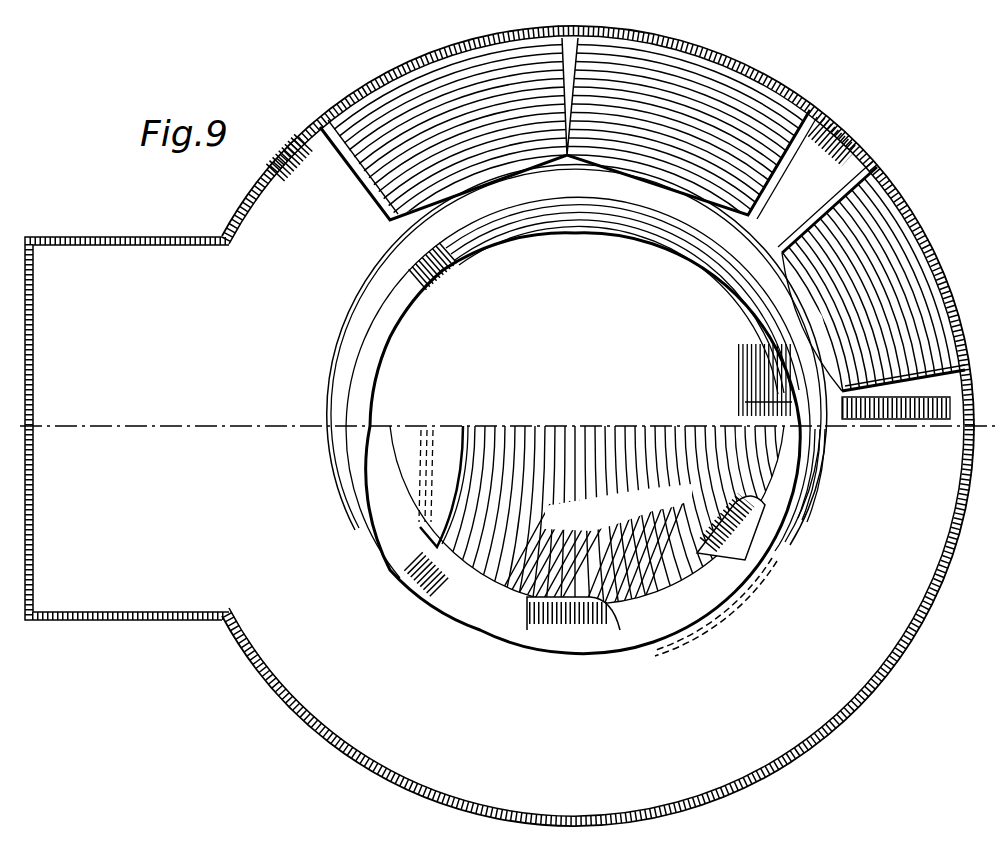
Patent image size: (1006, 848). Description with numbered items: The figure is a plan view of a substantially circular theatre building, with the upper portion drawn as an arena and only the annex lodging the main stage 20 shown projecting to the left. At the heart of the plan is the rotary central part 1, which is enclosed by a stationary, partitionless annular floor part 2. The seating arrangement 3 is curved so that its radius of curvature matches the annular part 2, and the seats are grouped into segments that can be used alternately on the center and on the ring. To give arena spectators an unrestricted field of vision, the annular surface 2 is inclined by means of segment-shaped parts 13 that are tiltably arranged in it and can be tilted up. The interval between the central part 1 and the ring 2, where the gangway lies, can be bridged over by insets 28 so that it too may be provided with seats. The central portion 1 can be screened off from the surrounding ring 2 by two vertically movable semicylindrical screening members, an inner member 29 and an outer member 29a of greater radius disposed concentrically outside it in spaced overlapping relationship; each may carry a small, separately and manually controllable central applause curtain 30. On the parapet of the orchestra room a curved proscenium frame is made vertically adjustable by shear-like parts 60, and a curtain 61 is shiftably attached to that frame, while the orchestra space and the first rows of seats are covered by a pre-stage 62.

The central part 1 is at (581, 379).
The annular floor part 2 is at (790, 338).
The seating arrangement 3 is at (380, 178).
The segment-shaped parts 13 is at (603, 161).
The main stage 20 is at (157, 428).
The insets 28 is at (692, 256).
The inner screening member 29 is at (818, 463).
The outer screening member 29a is at (778, 556).
The central applause curtain 30 is at (745, 603).
The shear-like parts 60 is at (396, 552).
The curtain 61 is at (418, 458).
The pre-stage 62 is at (436, 430).